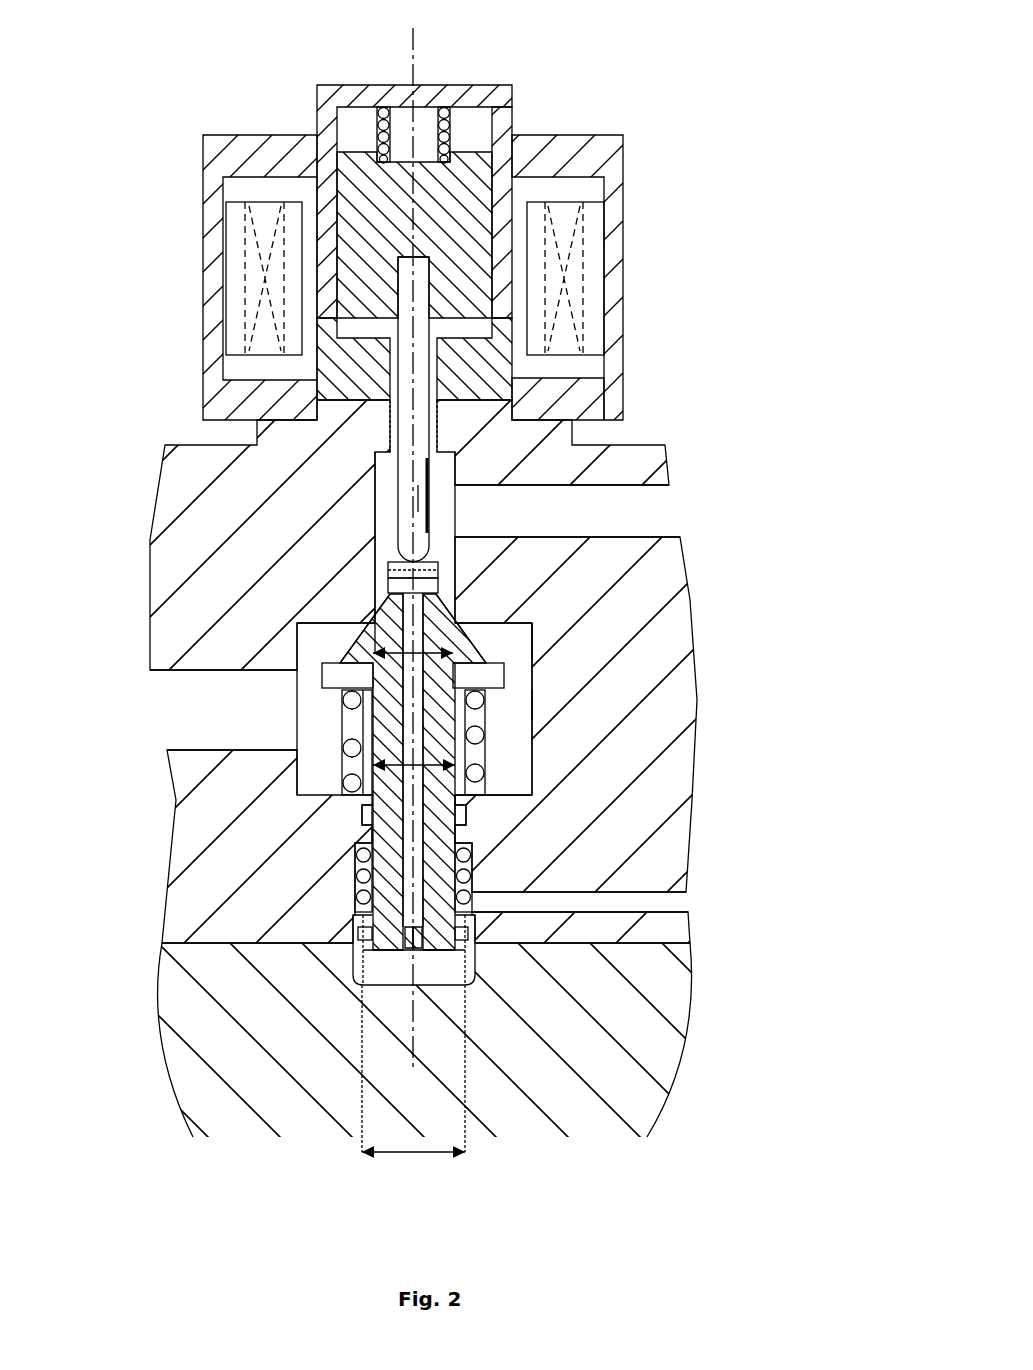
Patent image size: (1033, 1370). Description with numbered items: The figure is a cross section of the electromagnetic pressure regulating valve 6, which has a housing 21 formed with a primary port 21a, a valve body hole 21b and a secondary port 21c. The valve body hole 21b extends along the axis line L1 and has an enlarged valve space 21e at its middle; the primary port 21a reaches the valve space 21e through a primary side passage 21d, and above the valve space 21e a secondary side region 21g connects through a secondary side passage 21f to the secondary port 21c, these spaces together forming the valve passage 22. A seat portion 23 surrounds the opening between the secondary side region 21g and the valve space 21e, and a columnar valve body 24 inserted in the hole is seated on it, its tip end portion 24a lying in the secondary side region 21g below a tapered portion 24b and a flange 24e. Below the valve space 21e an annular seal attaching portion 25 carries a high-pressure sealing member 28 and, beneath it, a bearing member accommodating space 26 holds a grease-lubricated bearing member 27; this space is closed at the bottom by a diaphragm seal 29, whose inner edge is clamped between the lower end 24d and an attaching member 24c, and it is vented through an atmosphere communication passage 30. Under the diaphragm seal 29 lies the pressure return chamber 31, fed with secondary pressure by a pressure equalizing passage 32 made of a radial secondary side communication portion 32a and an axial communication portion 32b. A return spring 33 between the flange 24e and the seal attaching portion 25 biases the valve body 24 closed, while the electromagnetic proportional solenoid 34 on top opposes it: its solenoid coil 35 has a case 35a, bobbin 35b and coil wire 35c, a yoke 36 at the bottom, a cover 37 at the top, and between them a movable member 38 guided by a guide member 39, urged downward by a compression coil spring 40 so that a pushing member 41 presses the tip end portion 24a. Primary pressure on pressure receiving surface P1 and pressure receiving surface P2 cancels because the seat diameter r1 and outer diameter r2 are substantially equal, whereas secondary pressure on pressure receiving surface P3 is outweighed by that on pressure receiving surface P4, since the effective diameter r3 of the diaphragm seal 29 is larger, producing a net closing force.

The electromagnetic pressure regulating valve 6 is at (707, 152).
The housing 21 is at (190, 452).
The primary port 21a is at (170, 710).
The valve body hole 21b is at (523, 813).
The secondary port 21c is at (681, 510).
The primary side passage 21d is at (228, 664).
The valve space 21e is at (520, 753).
The secondary side passage 21f is at (623, 497).
The secondary side region 21g is at (440, 477).
The valve passage 22 is at (390, 518).
The seat portion 23 is at (370, 615).
The valve body 24 is at (300, 622).
The tip end portion 24a is at (387, 562).
The tapered portion 24b is at (472, 637).
The attaching member 24c is at (423, 987).
The lower end 24d is at (395, 978).
The flange 24e is at (505, 676).
The seal attaching portion 25 is at (358, 830).
The bearing member accommodating space 26 is at (355, 920).
The bearing member 27 is at (470, 873).
The high-pressure sealing member 28 is at (363, 815).
The diaphragm seal 29 is at (352, 925).
The atmosphere communication passage 30 is at (667, 903).
The pressure return chamber 31 is at (478, 973).
The pressure equalizing passage 32 is at (462, 828).
The secondary side communication portion 32a is at (440, 582).
The communication portion 32b is at (350, 730).
The return spring 33 is at (478, 737).
The electromagnetic proportional solenoid 34 is at (637, 122).
The solenoid coil 35 is at (733, 215).
The case 35a is at (613, 243).
The bobbin 35b is at (603, 355).
The coil wire 35c is at (565, 292).
The yoke 36 is at (473, 378).
The cover 37 is at (513, 88).
The movable member 38 is at (352, 203).
The guide member 39 is at (325, 233).
The compression coil spring 40 is at (452, 108).
The pushing member 41 is at (403, 405).
The axis line L1 is at (405, 62).
The pressure receiving surface P1 is at (500, 640).
The pressure receiving surface P2 is at (487, 702).
The pressure receiving surface P3 is at (433, 550).
The pressure receiving surface P4 is at (360, 962).
The seat diameter r1 is at (400, 656).
The outer diameter r2 is at (400, 769).
The effective diameter r3 is at (405, 1158).